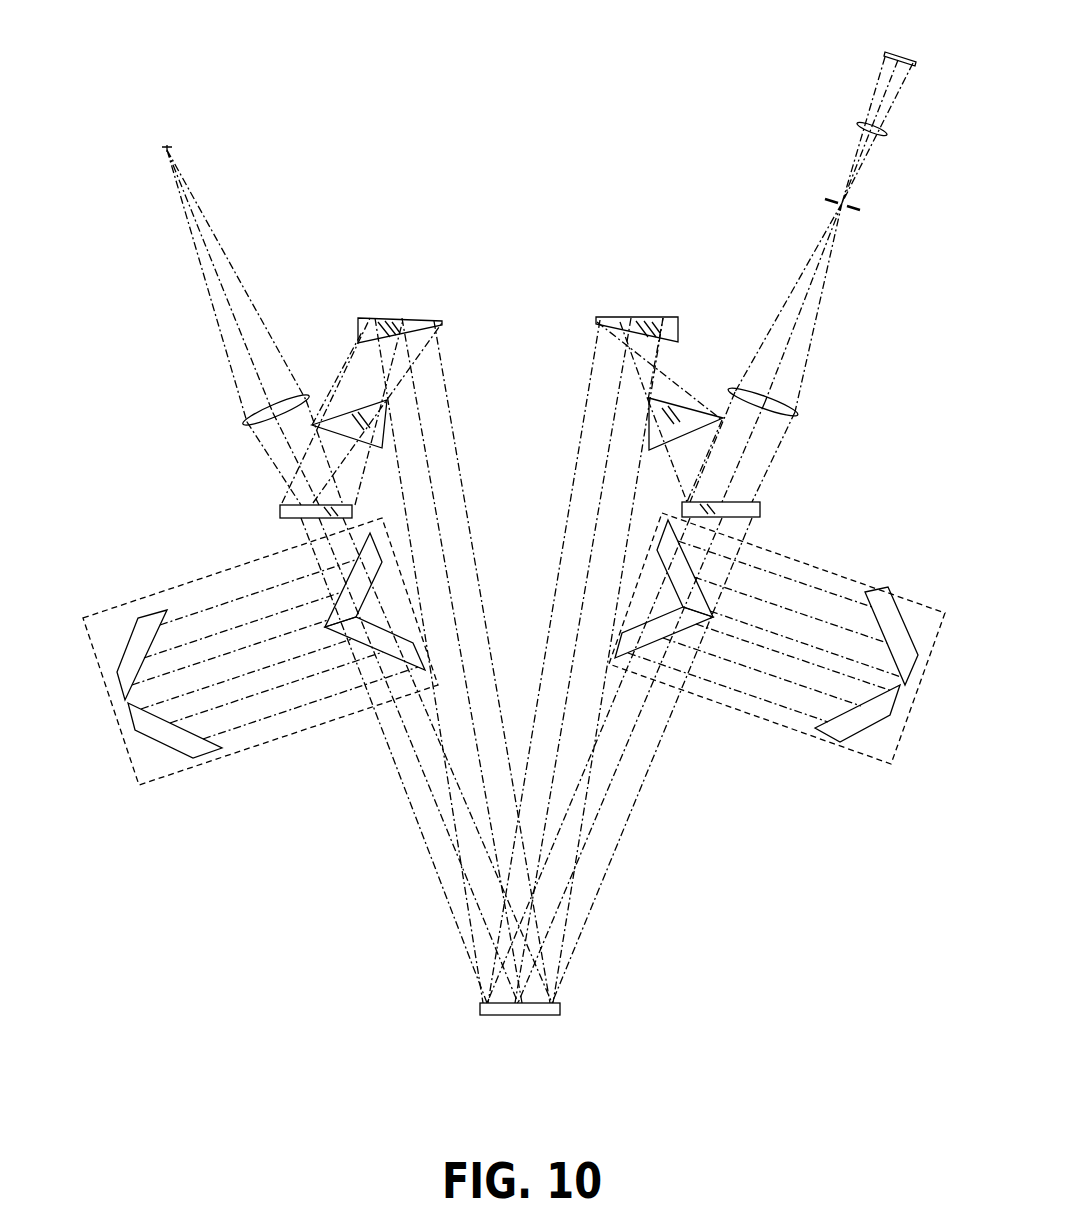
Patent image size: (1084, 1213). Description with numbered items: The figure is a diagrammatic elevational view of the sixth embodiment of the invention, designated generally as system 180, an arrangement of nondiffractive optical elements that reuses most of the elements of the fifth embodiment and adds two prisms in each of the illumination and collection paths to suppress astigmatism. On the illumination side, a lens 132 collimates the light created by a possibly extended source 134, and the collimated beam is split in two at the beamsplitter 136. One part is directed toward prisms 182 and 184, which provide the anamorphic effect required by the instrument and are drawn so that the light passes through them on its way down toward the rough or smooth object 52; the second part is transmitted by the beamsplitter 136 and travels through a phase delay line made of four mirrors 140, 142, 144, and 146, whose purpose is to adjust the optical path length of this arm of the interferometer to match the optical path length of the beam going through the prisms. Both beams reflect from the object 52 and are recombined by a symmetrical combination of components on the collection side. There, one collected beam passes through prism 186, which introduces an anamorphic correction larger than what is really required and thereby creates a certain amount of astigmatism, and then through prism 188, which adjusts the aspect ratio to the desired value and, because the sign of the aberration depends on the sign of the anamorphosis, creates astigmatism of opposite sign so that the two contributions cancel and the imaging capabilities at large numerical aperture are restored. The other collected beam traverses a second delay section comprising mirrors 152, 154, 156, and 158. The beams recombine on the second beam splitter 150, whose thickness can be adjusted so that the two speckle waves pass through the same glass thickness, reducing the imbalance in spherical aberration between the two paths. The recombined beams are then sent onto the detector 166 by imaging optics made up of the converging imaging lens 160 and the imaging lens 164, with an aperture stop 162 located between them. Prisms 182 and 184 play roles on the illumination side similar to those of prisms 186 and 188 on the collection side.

The object 52 is at (488, 1015).
The lens 132 is at (262, 408).
The source 134 is at (171, 151).
The beamsplitter 136 is at (280, 517).
The mirror 140 is at (350, 577).
The mirror 142 is at (160, 610).
The mirror 144 is at (175, 750).
The mirror 146 is at (393, 660).
The beam splitter 150 is at (747, 503).
The mirror 152 is at (648, 645).
The mirror 154 is at (863, 730).
The mirror 156 is at (693, 565).
The mirror 158 is at (873, 590).
The converging imaging lens 160 is at (786, 411).
The aperture stop 162 is at (852, 209).
The imaging lens 164 is at (858, 127).
The detector 166 is at (890, 55).
The system 180 is at (553, 80).
The prism 182 is at (388, 427).
The prism 184 is at (393, 320).
The prism 186 is at (642, 318).
The prism 188 is at (648, 418).